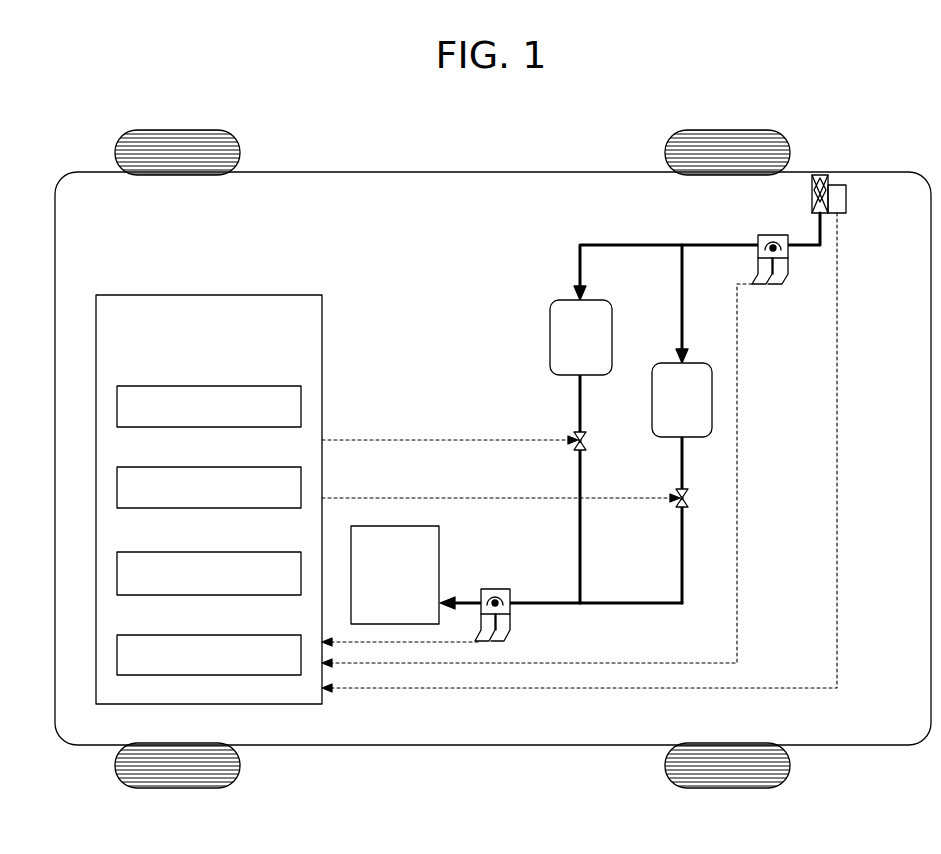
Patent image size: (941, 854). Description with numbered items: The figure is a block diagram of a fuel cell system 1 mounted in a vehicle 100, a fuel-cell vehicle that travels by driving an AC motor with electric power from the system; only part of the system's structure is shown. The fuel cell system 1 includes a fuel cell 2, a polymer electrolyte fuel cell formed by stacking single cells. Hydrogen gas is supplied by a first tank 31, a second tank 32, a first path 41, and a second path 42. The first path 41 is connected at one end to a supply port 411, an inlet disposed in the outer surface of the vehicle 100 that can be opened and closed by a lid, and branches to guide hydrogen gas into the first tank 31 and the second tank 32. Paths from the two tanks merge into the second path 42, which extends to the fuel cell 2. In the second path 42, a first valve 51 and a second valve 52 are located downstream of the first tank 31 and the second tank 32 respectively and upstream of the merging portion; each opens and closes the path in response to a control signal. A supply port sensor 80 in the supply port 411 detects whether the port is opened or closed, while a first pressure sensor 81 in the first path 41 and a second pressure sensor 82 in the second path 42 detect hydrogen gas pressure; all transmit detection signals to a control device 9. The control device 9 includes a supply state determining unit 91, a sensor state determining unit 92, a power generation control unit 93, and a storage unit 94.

The vehicle 100 is at (848, 156).
The fuel cell system 1 is at (408, 192).
The fuel cell 2 is at (442, 547).
The control device 9 is at (276, 295).
The supply state determining unit 91 is at (246, 387).
The sensor state determining unit 92 is at (243, 467).
The power generation control unit 93 is at (240, 552).
The storage unit 94 is at (244, 635).
The first tank 31 is at (667, 362).
The second tank 32 is at (601, 300).
The first path 41 is at (697, 244).
The second path 42 is at (560, 606).
The supply port 411 is at (811, 196).
The supply port sensor 80 is at (846, 214).
The first pressure sensor 81 is at (760, 235).
The second pressure sensor 82 is at (497, 589).
The first valve 51 is at (676, 497).
The second valve 52 is at (590, 440).